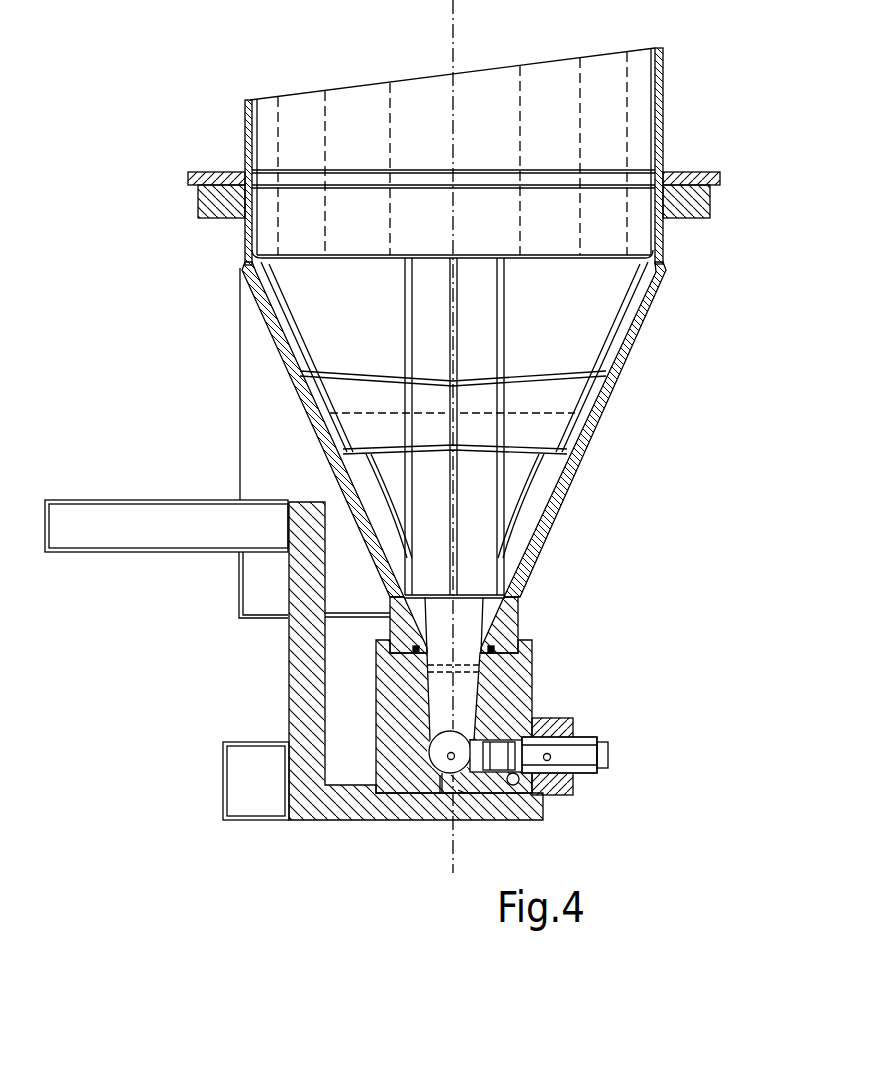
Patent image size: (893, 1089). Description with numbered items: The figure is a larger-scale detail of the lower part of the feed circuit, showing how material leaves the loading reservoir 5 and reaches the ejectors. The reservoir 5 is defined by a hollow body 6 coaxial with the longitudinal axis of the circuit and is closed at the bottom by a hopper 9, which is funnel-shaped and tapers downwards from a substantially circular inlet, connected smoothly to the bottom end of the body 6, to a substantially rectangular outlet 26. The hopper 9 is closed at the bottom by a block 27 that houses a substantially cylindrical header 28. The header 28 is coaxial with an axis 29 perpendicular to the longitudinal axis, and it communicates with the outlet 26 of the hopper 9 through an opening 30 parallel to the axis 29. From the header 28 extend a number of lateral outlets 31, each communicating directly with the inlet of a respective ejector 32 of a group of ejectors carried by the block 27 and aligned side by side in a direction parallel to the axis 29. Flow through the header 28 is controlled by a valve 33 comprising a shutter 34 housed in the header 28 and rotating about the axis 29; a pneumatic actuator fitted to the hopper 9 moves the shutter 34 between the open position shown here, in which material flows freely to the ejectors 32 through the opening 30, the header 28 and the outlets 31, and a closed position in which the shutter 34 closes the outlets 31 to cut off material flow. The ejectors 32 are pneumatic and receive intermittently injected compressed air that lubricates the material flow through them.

The loading reservoir 5 is at (668, 85).
The hollow body 6 is at (668, 124).
The hopper 9 is at (650, 293).
The outlet 26 is at (442, 646).
The block 27 is at (387, 700).
The header 28 is at (442, 785).
The axis 29 is at (458, 790).
The opening 30 is at (447, 722).
The lateral outlets 31 is at (497, 765).
The ejector 32 is at (577, 737).
The valve 33 is at (427, 712).
The shutter 34 is at (440, 780).